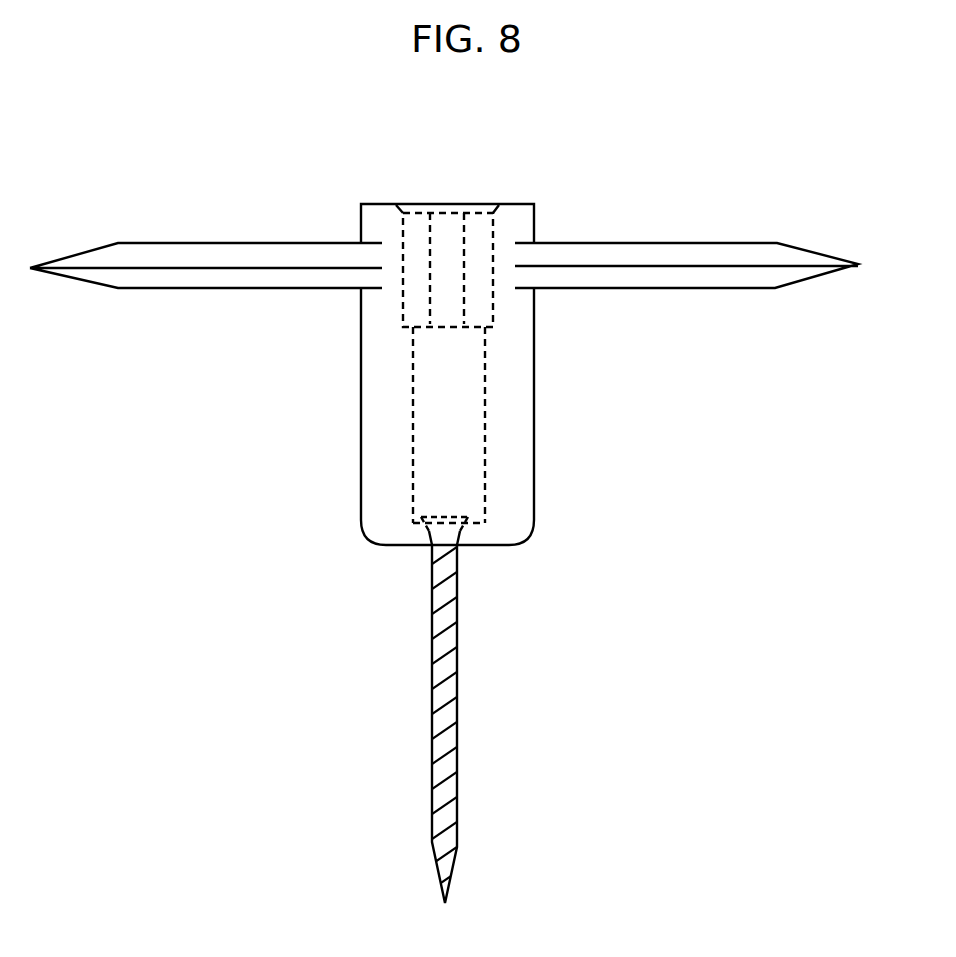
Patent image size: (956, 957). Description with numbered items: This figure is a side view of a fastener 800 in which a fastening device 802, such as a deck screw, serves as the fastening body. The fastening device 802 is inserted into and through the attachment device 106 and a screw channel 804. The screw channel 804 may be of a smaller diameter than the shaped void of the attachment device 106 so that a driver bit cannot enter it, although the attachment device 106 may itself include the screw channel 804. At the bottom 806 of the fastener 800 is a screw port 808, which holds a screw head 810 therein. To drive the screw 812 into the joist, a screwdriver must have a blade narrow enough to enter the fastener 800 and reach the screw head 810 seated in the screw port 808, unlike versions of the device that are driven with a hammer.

The fastener 800 is at (647, 175).
The attachment device 106 is at (446, 237).
The fastening device 802 is at (505, 643).
The screw channel 804 is at (445, 417).
The bottom 806 is at (477, 523).
The screw port 808 is at (427, 528).
The screw head 810 is at (427, 512).
The screw 812 is at (487, 783).